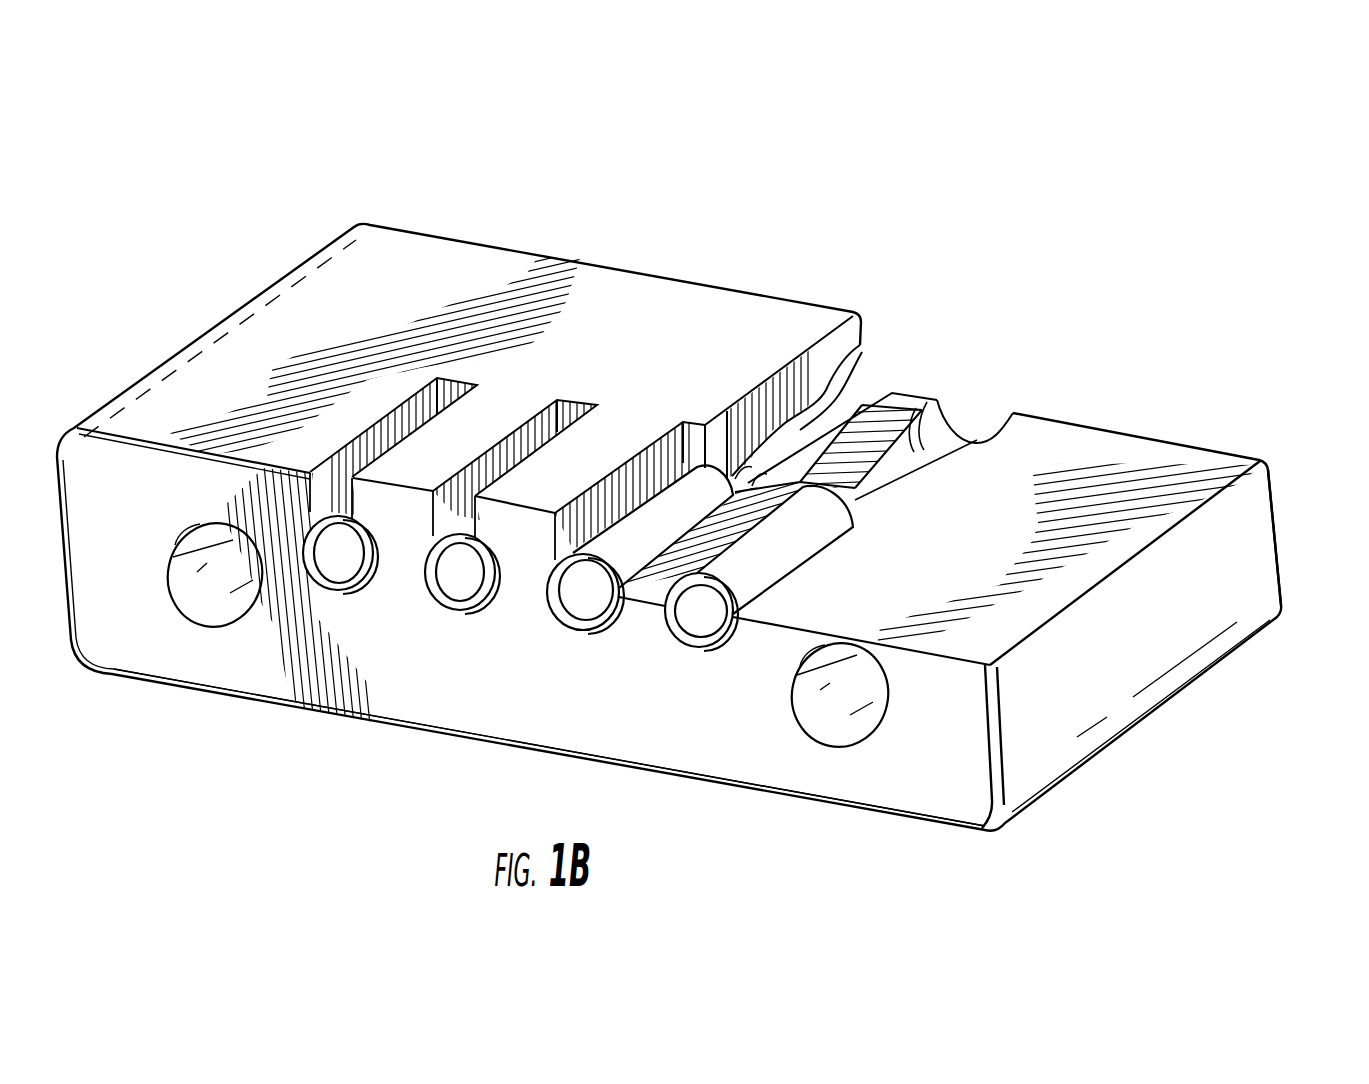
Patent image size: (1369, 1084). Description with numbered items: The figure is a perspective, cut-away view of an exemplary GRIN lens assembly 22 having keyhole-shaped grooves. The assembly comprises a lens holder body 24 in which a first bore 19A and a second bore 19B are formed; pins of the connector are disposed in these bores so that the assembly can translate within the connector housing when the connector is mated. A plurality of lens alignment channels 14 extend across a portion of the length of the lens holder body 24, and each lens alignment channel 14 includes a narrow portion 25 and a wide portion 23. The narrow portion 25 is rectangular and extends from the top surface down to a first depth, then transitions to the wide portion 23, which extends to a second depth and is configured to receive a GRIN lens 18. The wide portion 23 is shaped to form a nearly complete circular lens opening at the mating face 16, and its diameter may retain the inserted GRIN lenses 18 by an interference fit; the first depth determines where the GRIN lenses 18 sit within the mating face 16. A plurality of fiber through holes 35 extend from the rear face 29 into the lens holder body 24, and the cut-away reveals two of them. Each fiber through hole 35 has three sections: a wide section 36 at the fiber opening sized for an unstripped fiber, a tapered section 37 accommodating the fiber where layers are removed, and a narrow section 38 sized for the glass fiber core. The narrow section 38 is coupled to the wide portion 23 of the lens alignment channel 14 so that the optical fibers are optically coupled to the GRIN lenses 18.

The GRIN lens assembly 22 is at (348, 168).
The lens alignment channel 14 is at (322, 432).
The narrow portion 25 is at (442, 388).
The GRIN lens 18 is at (347, 560).
The wide portion 23 is at (323, 597).
The first bore 19A is at (200, 603).
The second bore 19B is at (882, 716).
The mating face 16 is at (726, 770).
The lens holder body 24 is at (1063, 764).
The rear face 29 is at (1283, 505).
The fiber through hole 35 is at (890, 351).
The wide section 36 is at (838, 356).
The tapered section 37 is at (800, 412).
The narrow section 38 is at (730, 440).